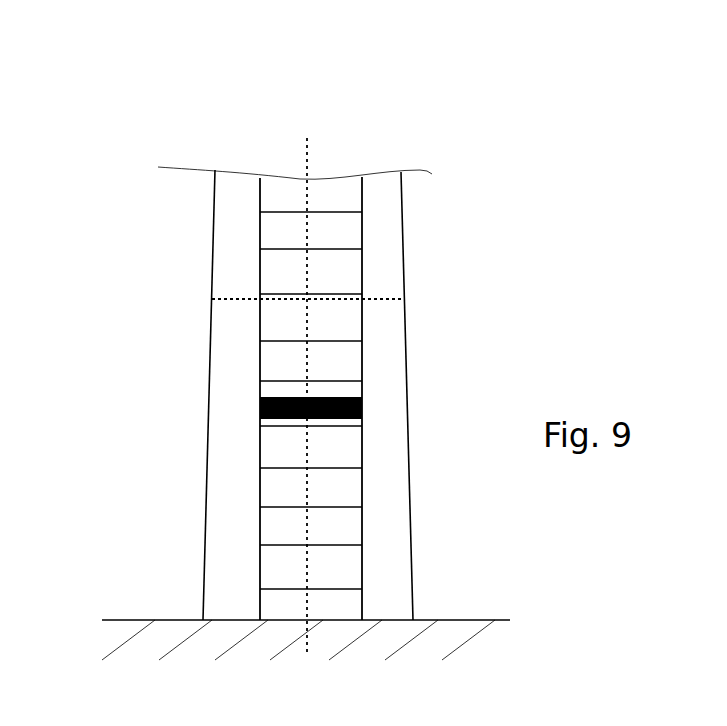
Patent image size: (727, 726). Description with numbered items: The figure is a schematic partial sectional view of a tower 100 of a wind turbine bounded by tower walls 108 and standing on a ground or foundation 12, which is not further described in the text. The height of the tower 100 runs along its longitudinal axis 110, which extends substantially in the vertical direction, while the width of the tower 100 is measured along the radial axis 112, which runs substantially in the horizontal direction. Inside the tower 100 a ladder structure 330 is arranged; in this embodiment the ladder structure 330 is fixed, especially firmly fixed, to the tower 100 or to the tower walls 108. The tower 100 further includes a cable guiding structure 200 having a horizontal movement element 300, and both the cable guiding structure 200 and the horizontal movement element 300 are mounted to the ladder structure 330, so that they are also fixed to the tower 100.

The tower 100 is at (517, 137).
The tower walls 108 is at (203, 570).
The longitudinal axis 110 is at (307, 163).
The radial axis 112 is at (377, 298).
The cable guiding structure 200 is at (240, 409).
The horizontal movement element 300 is at (337, 397).
The ladder structure 330 is at (362, 524).
The ground 12 is at (499, 684).